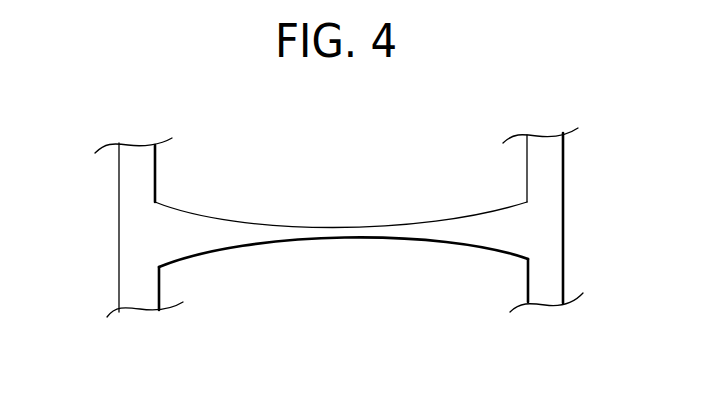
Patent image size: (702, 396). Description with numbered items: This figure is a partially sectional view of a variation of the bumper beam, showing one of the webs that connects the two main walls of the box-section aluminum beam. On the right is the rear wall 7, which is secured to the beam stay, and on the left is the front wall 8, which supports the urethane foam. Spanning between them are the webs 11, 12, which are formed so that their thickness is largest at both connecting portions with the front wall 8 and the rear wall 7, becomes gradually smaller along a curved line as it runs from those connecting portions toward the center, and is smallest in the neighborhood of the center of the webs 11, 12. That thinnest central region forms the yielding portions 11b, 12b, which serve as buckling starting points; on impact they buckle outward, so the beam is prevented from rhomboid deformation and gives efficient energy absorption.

The rear wall 7 is at (543, 218).
The front wall 8 is at (145, 242).
The web 11 is at (341, 190).
The web 12 is at (213, 233).
The yielding portion 11b is at (343, 286).
The yielding portion 12b is at (322, 243).